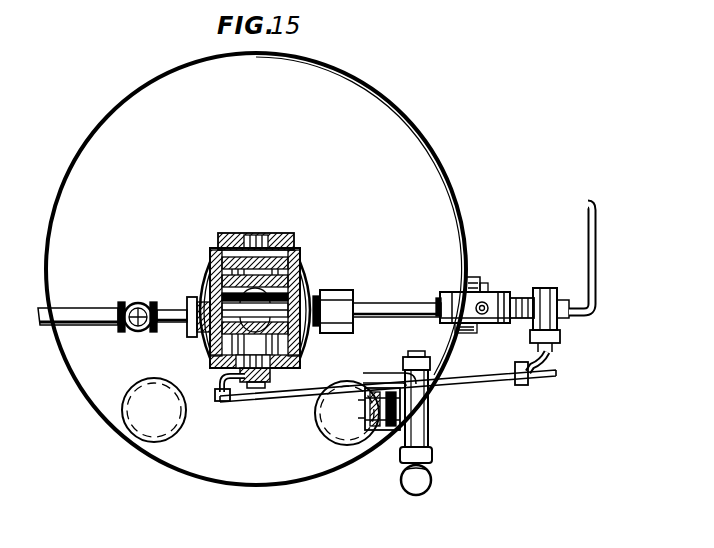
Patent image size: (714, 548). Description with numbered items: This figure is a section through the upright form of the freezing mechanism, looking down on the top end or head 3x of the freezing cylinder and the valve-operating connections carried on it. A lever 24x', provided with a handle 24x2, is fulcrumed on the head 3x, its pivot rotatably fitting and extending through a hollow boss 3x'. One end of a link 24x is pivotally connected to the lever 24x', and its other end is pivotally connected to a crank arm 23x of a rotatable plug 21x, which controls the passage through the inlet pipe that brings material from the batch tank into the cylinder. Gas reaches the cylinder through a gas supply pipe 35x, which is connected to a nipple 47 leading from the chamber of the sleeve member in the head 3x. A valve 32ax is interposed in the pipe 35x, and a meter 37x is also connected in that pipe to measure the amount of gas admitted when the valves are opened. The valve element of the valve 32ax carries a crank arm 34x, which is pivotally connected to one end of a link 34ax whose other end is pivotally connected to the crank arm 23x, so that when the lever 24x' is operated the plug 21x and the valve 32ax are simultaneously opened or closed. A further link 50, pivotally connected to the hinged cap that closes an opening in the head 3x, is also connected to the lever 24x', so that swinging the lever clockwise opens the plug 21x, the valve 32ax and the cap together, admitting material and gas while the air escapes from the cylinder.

The top end or head 3x is at (252, 269).
The rotatable plug 21x is at (308, 289).
The nipple 47 is at (322, 301).
The meter 37x is at (498, 294).
The valve 32ax is at (546, 288).
The gas supply pipe 35x is at (595, 313).
The crank arm 34x is at (554, 366).
The link 34ax is at (496, 381).
The crank arm 23x is at (246, 405).
The link 24x is at (375, 367).
The lever 24x' is at (420, 349).
The handle 24x2 is at (430, 484).
The link 50 is at (373, 386).
The hollow boss 3x' is at (432, 416).